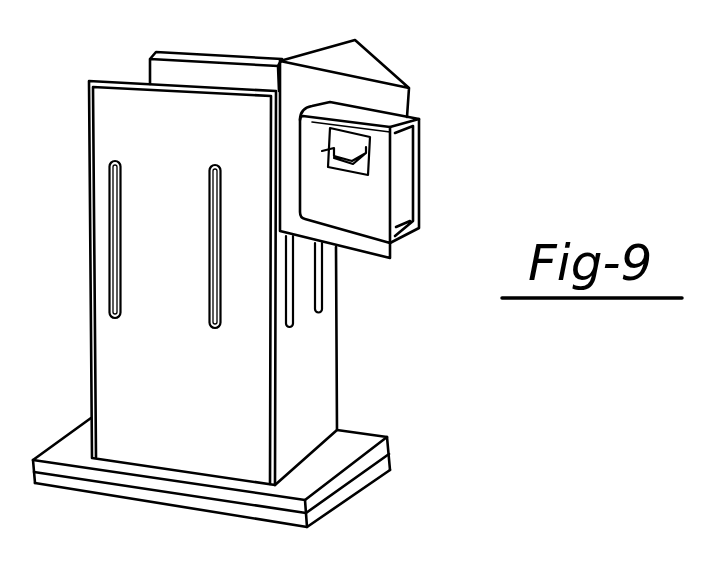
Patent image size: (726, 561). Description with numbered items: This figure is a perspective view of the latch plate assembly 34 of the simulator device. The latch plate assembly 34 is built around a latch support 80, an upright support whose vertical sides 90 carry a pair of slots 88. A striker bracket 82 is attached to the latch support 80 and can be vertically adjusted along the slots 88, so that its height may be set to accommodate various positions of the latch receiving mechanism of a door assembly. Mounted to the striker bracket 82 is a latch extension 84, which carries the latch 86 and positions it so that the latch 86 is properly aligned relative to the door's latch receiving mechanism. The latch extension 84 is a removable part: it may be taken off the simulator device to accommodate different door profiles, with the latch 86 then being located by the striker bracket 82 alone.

The latch plate assembly 34 is at (382, 129).
The latch support 80 is at (210, 53).
The striker bracket 82 is at (395, 67).
The latch extension 84 is at (421, 199).
The latch 86 is at (372, 158).
The slots 88 is at (117, 320).
The vertical sides 90 is at (203, 430).